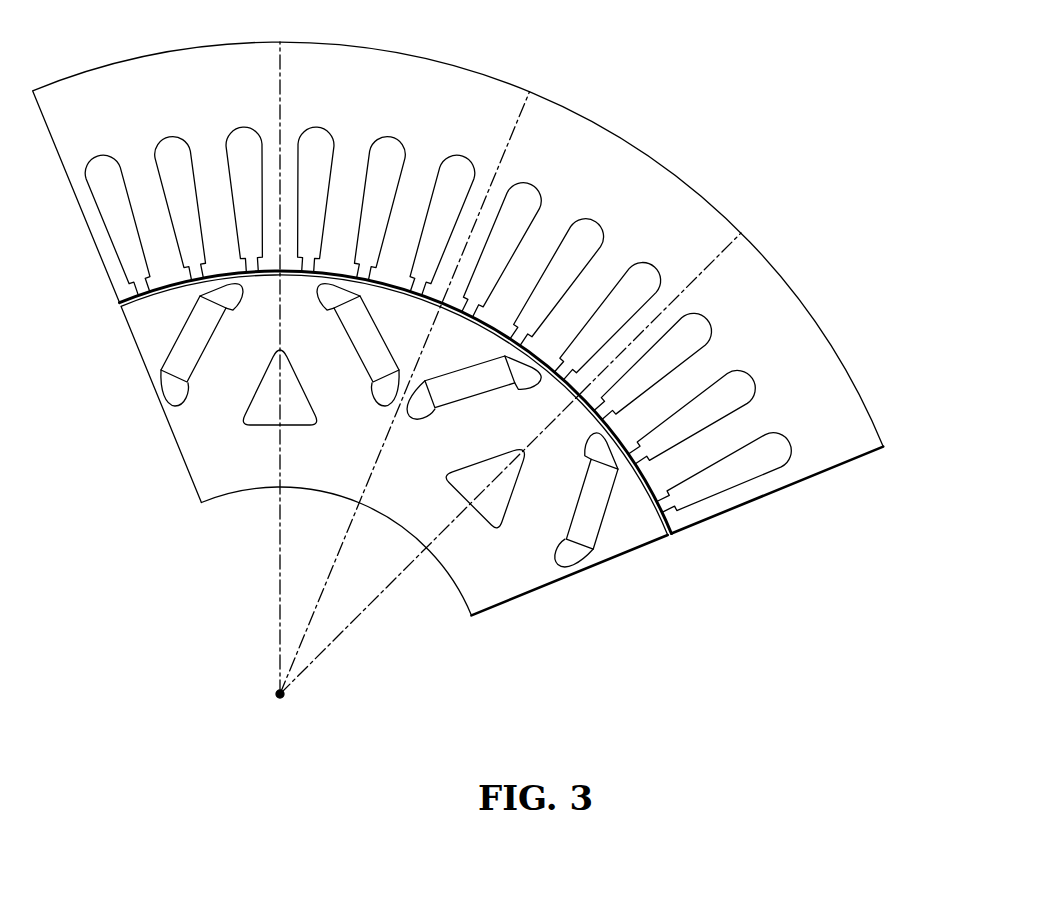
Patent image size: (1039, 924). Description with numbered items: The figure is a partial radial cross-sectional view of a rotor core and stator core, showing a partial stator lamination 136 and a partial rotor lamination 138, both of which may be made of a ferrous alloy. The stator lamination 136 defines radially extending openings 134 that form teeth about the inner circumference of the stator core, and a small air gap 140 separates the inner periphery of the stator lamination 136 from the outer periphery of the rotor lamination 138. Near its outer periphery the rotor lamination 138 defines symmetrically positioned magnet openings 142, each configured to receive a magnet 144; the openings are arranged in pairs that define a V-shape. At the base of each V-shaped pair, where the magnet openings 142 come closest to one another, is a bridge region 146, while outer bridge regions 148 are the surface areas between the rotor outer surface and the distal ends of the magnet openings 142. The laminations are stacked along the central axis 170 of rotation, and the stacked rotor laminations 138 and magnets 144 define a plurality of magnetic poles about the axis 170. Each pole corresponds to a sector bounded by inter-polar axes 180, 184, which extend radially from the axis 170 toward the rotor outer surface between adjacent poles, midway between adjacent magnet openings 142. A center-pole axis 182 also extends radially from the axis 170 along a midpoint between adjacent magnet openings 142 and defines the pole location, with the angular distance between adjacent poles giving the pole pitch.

The radially extending opening 134 is at (234, 220).
The stator lamination 136 is at (806, 292).
The rotor lamination 138 is at (483, 582).
The air gap 140 is at (120, 305).
The magnet opening 142 is at (348, 348).
The magnet 144 is at (188, 334).
The bridge region 146 is at (400, 402).
The outer bridge region 148 is at (381, 366).
The central axis of rotation 170 is at (276, 694).
The inter-polar axis 180 is at (362, 612).
The center-pole axis 182 is at (313, 617).
The inter-polar axis 184 is at (279, 565).